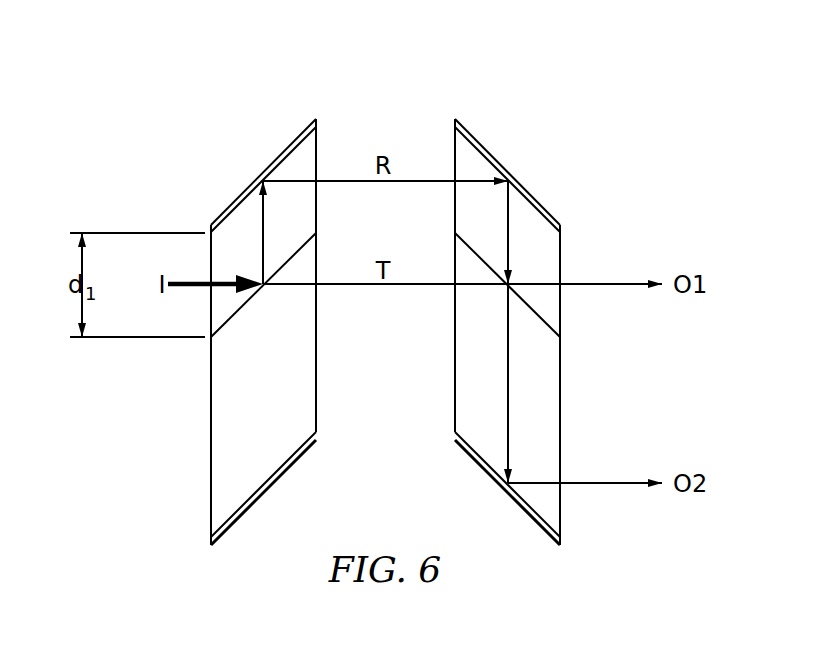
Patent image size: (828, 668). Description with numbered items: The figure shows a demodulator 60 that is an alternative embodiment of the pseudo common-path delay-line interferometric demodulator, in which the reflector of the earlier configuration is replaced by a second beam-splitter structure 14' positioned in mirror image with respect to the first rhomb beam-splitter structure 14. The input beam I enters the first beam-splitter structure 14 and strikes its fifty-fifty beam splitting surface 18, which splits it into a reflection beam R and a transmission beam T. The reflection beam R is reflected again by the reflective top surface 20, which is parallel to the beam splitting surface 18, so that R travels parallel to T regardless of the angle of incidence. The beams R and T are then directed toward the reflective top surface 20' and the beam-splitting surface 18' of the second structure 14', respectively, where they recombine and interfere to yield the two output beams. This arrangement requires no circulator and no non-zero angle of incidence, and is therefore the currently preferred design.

The demodulator 60 is at (400, 93).
The rhomb beam-splitter structure 14 is at (288, 332).
The second beam-splitter structure 14' is at (517, 332).
The beam splitting surface 18 is at (263, 300).
The beam-splitting surface 18' is at (545, 285).
The reflective top surface 20 is at (288, 175).
The reflective top surface 20' is at (479, 175).